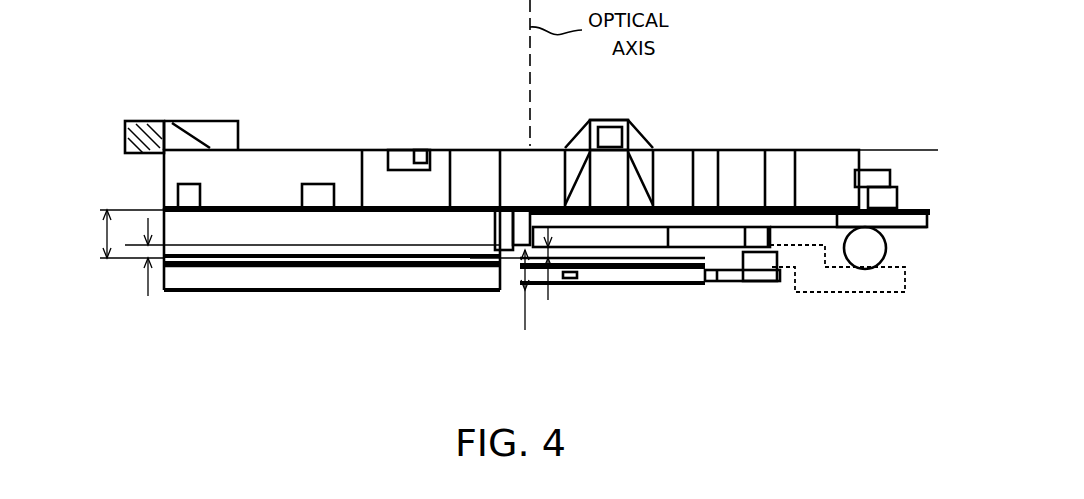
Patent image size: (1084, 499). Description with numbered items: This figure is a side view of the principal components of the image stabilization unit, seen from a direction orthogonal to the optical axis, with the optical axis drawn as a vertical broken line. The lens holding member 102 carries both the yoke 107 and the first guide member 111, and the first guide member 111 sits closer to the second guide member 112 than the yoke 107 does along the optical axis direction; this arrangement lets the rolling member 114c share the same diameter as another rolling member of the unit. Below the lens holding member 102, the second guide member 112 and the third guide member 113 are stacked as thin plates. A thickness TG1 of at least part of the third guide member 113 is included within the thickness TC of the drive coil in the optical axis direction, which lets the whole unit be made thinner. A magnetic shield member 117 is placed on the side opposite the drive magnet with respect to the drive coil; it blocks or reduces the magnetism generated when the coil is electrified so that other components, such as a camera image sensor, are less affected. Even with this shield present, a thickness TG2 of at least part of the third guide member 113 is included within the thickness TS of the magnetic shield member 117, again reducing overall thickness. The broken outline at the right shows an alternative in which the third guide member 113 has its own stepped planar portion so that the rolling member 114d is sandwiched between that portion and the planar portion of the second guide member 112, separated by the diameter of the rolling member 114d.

The lens holding member 102 is at (290, 150).
The yoke 107 is at (400, 152).
The first guide member 111 is at (875, 172).
The second guide member 112 is at (750, 250).
The third guide member 113 is at (682, 283).
The rolling member 114c is at (585, 240).
The rolling member 114d is at (867, 252).
The magnetic shield member 117 is at (282, 268).
The thickness of the drive coil TC is at (112, 234).
The thickness of the third guide member TG1 is at (141, 266).
The thickness of the third guide member TG2 is at (525, 277).
The thickness of the magnetic shield member TS is at (511, 298).